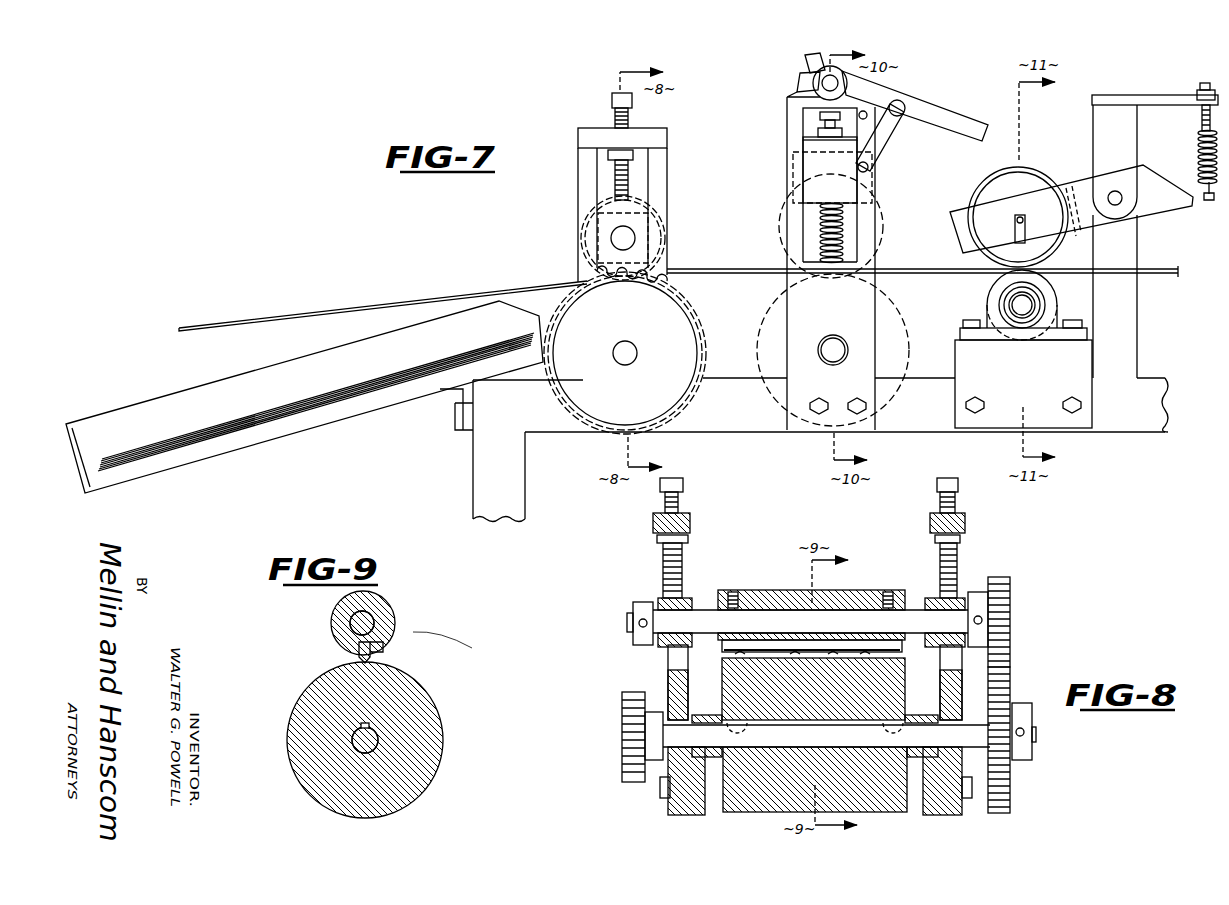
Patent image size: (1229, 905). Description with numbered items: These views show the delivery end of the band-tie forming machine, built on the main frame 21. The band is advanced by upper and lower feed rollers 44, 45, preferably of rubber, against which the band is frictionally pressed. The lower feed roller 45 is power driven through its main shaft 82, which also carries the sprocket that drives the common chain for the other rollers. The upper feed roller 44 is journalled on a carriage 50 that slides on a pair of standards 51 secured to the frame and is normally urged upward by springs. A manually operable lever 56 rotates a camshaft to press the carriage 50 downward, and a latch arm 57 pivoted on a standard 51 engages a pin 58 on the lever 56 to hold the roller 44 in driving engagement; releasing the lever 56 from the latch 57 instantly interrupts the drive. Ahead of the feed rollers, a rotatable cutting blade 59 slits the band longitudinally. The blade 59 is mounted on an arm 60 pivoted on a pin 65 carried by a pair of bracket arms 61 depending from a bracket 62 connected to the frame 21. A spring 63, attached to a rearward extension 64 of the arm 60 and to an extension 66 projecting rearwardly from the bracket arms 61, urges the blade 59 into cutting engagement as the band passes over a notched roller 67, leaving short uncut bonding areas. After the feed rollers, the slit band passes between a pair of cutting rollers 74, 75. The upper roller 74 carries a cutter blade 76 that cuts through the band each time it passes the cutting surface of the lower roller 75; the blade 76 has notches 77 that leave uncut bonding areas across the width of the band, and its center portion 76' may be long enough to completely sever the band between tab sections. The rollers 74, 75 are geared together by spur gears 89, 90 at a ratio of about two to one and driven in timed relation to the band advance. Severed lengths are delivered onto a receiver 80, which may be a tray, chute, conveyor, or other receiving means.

In FIG. 7, the frame 21 is at (1158, 376).
In FIG. 7, the receiver 80 is at (324, 426).
In FIG. 7, the spur gear 89 is at (660, 263).
In FIG. 8, the spur gear 89 is at (1003, 594).
In FIG. 7, the spur gear 90 is at (670, 287).
In FIG. 8, the spur gear 90 is at (1003, 698).
In FIG. 7, the upper feed roller 44 is at (782, 233).
In FIG. 7, the lower feed roller 45 is at (762, 344).
In FIG. 7, the main shaft 82 is at (836, 338).
In FIG. 7, the carriage 50 is at (850, 191).
In FIG. 7, the standards 51 is at (868, 228).
In FIG. 7, the lever 56 is at (960, 118).
In FIG. 7, the latch arm 57 is at (883, 143).
In FIG. 7, the pin 58 is at (904, 104).
In FIG. 7, the cutting blade 59 is at (1034, 176).
In FIG. 7, the arm 60 is at (968, 212).
In FIG. 7, the bracket arms 61 is at (1136, 146).
In FIG. 7, the bracket 62 is at (1137, 250).
In FIG. 7, the spring 63 is at (1198, 165).
In FIG. 7, the rearward extension 64 is at (1210, 201).
In FIG. 7, the pin 65 is at (1110, 194).
In FIG. 7, the extension 66 is at (1168, 100).
In FIG. 7, the roller 67 is at (990, 302).
In FIG. 8, the upper cutting roller 74 is at (768, 596).
In FIG. 9, the upper cutting roller 74 is at (388, 618).
In FIG. 8, the lower cutting roller 75 is at (902, 698).
In FIG. 9, the lower cutting roller 75 is at (422, 704).
In FIG. 8, the cutter blade 76 is at (720, 676).
In FIG. 9, the cutter blade 76 is at (339, 655).
In FIG. 8, the center portion 76' is at (812, 612).
In FIG. 8, the notches 77 is at (830, 655).